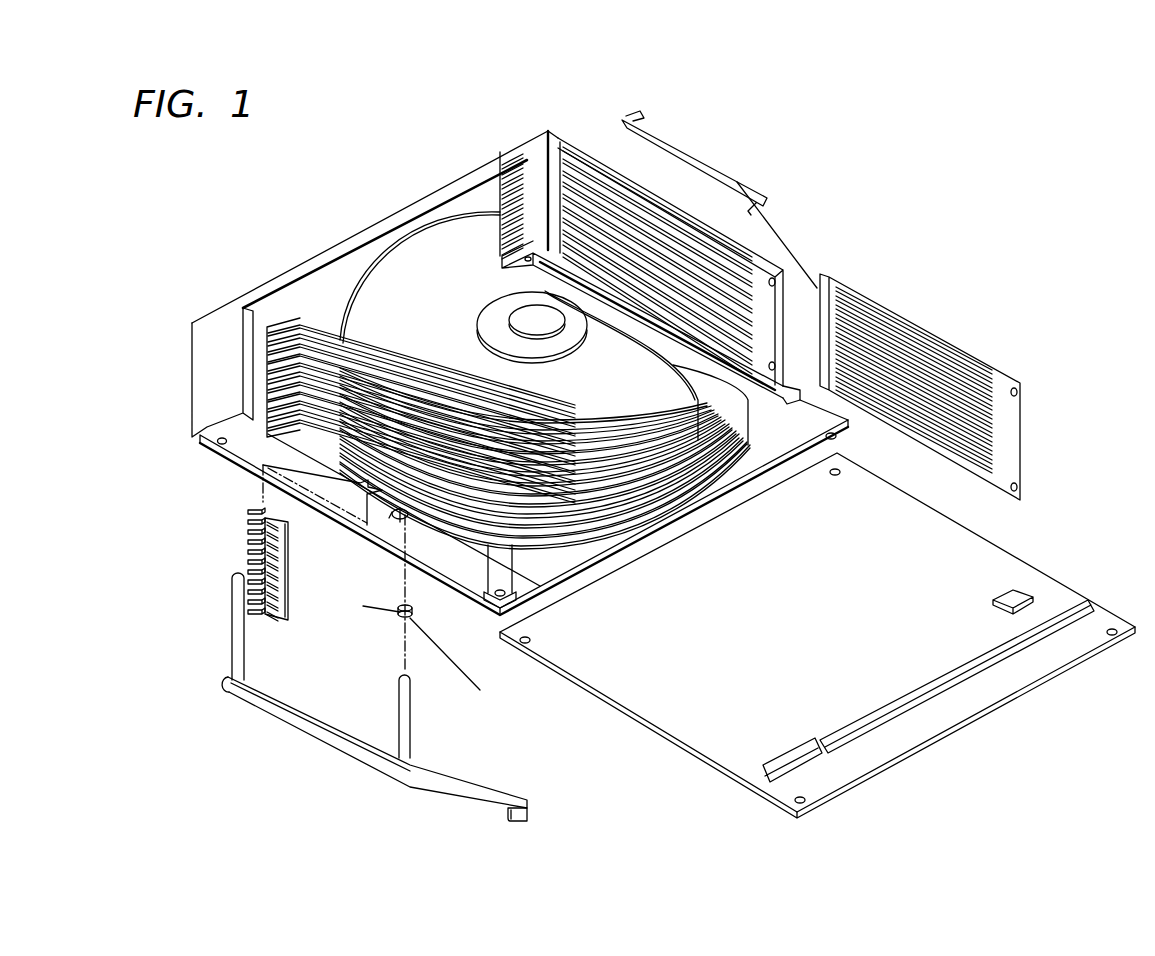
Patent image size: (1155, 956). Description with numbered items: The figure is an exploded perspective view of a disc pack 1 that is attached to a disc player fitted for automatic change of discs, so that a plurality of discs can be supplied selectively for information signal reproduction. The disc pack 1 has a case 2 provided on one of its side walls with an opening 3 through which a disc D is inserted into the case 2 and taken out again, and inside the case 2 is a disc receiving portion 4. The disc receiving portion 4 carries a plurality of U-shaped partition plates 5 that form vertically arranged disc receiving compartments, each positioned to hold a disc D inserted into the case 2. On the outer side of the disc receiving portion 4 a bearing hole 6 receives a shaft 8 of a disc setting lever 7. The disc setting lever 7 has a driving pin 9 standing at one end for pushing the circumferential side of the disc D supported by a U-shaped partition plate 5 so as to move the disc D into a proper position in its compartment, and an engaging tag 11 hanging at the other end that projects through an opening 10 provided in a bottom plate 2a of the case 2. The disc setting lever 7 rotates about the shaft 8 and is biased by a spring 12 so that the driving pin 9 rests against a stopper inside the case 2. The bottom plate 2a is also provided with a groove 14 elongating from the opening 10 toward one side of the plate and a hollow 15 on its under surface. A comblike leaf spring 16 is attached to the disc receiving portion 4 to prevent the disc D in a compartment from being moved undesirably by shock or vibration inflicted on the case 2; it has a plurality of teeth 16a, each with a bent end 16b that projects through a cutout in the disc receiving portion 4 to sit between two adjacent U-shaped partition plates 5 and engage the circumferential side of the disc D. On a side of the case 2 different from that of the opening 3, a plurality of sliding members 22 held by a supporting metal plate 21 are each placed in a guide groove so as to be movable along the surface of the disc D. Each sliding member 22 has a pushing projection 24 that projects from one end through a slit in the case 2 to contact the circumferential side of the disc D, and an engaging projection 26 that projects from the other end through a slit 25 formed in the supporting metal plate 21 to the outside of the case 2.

The disc pack 1 is at (267, 191).
The case 2 is at (228, 322).
The bottom plate 2a is at (1022, 558).
The opening 3 is at (457, 202).
The disc receiving portion 4 is at (413, 380).
The U-shaped partition plates 5 is at (328, 348).
The bearing hole 6 is at (410, 522).
The disc setting lever 7 is at (333, 740).
The shaft 8 is at (410, 707).
The driving pin 9 is at (233, 620).
The opening 10 is at (788, 758).
The engaging tag 11 is at (527, 815).
The spring 12 is at (430, 636).
The groove 14 is at (945, 673).
The hollow 15 is at (1008, 603).
The comblike leaf spring 16 is at (282, 573).
The teeth 16a is at (268, 607).
The bent end 16b is at (250, 528).
The supporting metal plate 21 is at (920, 386).
The sliding members 22 is at (638, 195).
The pushing projection 24 is at (753, 210).
The slit 25 is at (900, 322).
The engaging projection 26 is at (643, 118).
The disc D is at (363, 263).